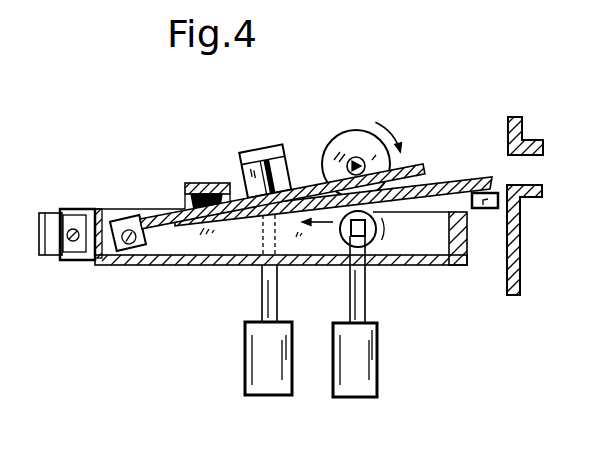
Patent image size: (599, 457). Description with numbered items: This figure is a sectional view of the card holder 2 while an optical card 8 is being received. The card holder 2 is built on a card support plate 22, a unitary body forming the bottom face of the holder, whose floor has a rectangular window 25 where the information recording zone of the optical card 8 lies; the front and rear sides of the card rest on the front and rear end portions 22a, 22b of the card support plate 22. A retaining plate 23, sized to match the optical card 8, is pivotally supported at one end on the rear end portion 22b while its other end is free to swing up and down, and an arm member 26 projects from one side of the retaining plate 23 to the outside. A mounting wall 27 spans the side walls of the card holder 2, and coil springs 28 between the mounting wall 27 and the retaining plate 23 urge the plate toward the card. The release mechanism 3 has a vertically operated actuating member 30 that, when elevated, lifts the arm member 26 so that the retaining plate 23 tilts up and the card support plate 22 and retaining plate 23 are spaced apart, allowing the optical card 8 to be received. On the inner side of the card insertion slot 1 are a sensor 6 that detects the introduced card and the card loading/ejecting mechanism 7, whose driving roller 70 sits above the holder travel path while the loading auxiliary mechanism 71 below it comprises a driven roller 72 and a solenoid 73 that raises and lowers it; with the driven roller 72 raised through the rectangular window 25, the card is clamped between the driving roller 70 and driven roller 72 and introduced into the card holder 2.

The card insertion slot 1 is at (533, 153).
The card holder 2 is at (95, 203).
The release mechanism 3 is at (244, 376).
The sensor 6 is at (490, 209).
The card loading/ejecting mechanism 7 is at (403, 122).
The optical card 8 is at (457, 177).
The card support plate 22 is at (288, 279).
The front end portion 22a is at (527, 344).
The rear end portion 22b is at (122, 265).
The retaining plate 23 is at (150, 217).
The rectangular window 25 is at (172, 266).
The arm member 26 is at (258, 153).
The mounting wall 27 is at (190, 199).
The coil spring 28 is at (213, 184).
The actuating member 30 is at (262, 288).
The driving roller 70 is at (323, 158).
The loading auxiliary mechanism 71 is at (333, 384).
The driven roller 72 is at (371, 242).
The solenoid 73 is at (377, 373).